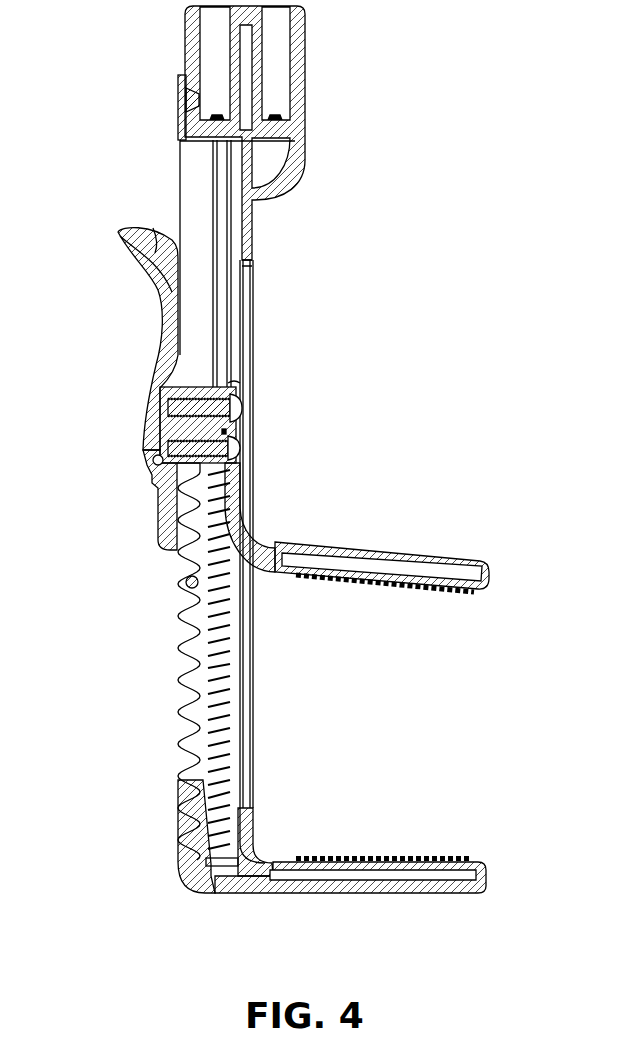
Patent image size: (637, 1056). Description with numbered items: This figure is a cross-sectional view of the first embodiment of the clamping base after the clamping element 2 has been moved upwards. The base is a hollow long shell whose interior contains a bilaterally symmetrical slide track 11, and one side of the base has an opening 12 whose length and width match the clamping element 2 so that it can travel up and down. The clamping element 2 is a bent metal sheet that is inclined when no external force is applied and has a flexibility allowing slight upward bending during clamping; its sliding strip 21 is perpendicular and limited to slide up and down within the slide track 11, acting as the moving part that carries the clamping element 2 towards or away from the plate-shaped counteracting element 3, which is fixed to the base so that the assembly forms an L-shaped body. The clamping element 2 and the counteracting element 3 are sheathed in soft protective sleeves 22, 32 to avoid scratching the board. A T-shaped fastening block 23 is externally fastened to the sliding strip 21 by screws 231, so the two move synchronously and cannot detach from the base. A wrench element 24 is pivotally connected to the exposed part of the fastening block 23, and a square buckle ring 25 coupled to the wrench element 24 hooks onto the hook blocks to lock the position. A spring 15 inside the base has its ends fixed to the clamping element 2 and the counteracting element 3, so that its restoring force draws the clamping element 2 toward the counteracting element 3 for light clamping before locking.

The slide track 11 is at (236, 372).
The opening 12 is at (242, 695).
The spring 15 is at (226, 636).
The clamping element 2 is at (367, 570).
The sliding strip 21 is at (233, 493).
The protective sleeve 22 is at (447, 562).
The fastening block 23 is at (170, 497).
The screws 231 is at (231, 448).
The wrench element 24 is at (163, 364).
The buckle ring 25 is at (188, 586).
The counteracting element 3 is at (395, 890).
The protective sleeve 32 is at (481, 875).